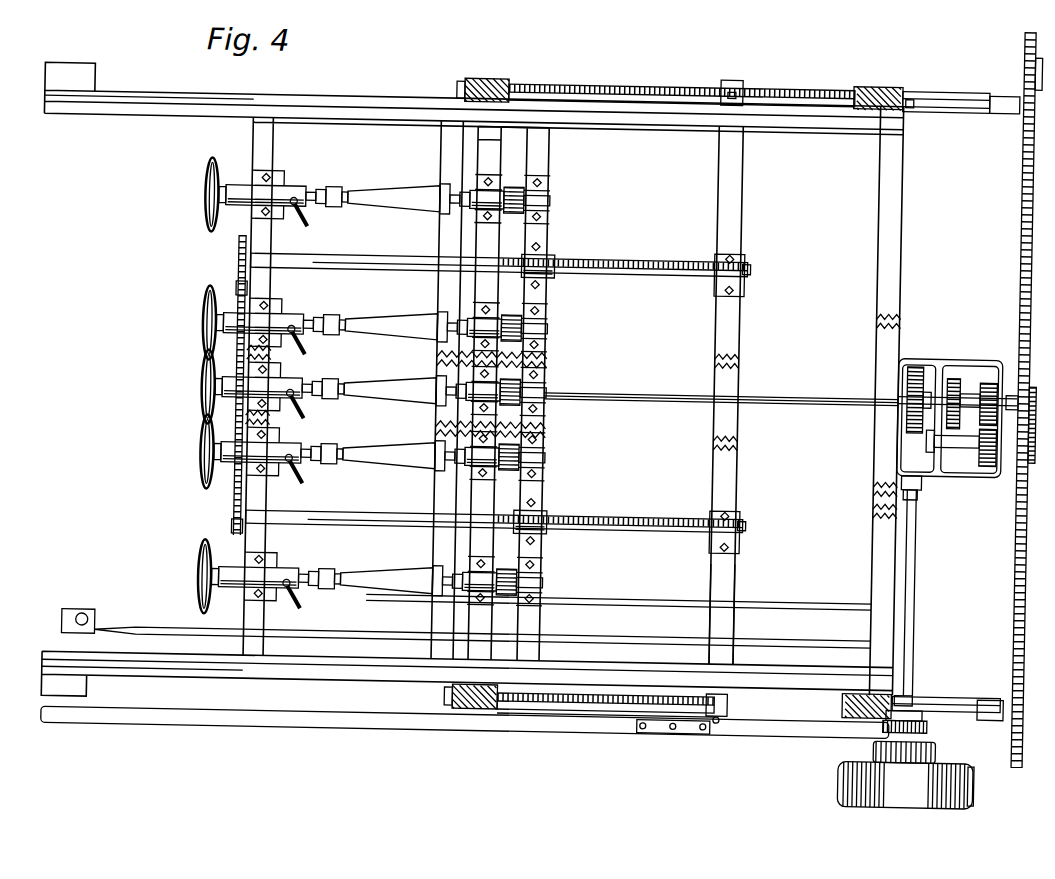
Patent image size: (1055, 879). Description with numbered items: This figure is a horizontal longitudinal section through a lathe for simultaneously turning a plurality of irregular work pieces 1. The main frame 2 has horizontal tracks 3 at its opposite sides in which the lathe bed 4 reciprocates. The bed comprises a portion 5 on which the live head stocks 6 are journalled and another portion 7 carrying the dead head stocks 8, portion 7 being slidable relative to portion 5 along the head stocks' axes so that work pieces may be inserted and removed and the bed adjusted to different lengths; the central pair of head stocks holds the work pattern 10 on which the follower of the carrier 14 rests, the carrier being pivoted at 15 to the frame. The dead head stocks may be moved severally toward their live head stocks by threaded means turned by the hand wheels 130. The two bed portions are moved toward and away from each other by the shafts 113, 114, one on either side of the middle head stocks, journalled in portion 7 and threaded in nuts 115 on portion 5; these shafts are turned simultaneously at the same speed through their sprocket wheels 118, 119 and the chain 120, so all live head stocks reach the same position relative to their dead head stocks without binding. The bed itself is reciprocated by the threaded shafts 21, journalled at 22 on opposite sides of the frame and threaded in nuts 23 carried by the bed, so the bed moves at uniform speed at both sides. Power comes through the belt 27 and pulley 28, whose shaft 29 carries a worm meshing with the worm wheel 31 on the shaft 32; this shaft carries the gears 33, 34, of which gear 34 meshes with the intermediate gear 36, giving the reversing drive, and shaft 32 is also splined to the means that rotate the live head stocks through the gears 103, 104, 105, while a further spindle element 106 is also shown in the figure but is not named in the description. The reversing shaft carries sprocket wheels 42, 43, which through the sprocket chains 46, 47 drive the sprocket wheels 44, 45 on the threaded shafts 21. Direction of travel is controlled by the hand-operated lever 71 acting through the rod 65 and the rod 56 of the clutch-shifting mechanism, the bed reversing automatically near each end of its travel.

The work pieces 1 is at (392, 208).
The main frame 2 is at (177, 101).
The horizontal tracks 3 is at (153, 104).
The lathe bed 4 is at (275, 148).
The portion of the lathe bed 5 is at (493, 166).
The live head stocks 6 is at (462, 210).
The portion of the lathe bed 7 is at (344, 113).
The dead head stocks 8 is at (310, 194).
The work pattern 10 is at (440, 218).
The carrier 14 is at (729, 585).
The pivotal mounting 15 is at (503, 311).
The threaded shafts 21 is at (681, 84).
The journals 22 is at (514, 83).
The nuts 23 is at (748, 86).
The belt 27 is at (983, 778).
The pulley 28 is at (905, 786).
The shaft 29 is at (920, 562).
The worm wheel 31 is at (905, 355).
The shaft 32 is at (830, 392).
The gear 33 is at (948, 362).
The gear 34 is at (985, 368).
The intermediate gear 36 is at (982, 468).
The sprocket wheel 42 is at (1006, 413).
The sprocket wheel 43 is at (1027, 378).
The sprocket wheel 44 is at (1016, 725).
The sprocket wheel 45 is at (1020, 58).
The sprocket chain 46 is at (1020, 580).
The sprocket chain 47 is at (1016, 218).
The rod 56 is at (585, 598).
The rod 65 is at (362, 636).
The hand-operated lever 71 is at (92, 620).
The gear 103 is at (520, 392).
The gear 104 is at (520, 330).
The gear 105 is at (522, 462).
The spindle sleeve 106 is at (440, 475).
The shaft 113 is at (664, 290).
The shaft 114 is at (618, 518).
The nuts 115 is at (560, 264).
The sprocket wheel 118 is at (237, 242).
The sprocket wheel 119 is at (235, 528).
The chain 120 is at (234, 292).
The hand wheels 130 is at (206, 206).